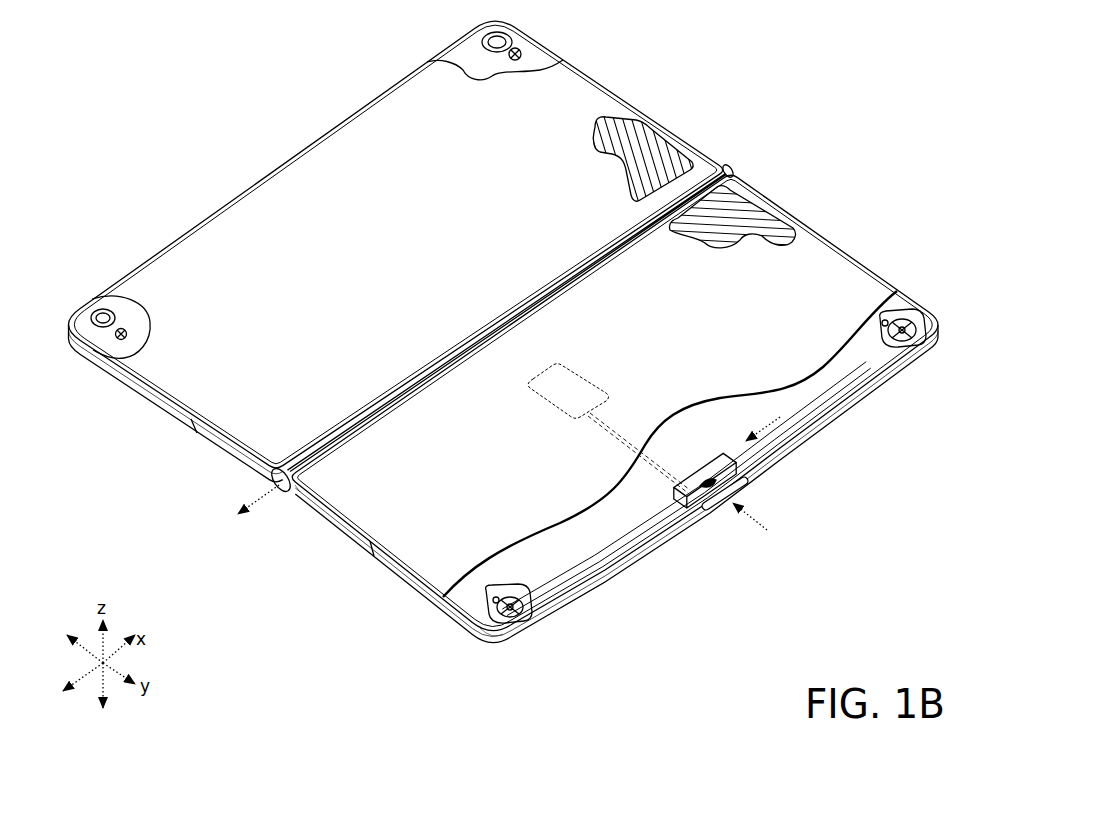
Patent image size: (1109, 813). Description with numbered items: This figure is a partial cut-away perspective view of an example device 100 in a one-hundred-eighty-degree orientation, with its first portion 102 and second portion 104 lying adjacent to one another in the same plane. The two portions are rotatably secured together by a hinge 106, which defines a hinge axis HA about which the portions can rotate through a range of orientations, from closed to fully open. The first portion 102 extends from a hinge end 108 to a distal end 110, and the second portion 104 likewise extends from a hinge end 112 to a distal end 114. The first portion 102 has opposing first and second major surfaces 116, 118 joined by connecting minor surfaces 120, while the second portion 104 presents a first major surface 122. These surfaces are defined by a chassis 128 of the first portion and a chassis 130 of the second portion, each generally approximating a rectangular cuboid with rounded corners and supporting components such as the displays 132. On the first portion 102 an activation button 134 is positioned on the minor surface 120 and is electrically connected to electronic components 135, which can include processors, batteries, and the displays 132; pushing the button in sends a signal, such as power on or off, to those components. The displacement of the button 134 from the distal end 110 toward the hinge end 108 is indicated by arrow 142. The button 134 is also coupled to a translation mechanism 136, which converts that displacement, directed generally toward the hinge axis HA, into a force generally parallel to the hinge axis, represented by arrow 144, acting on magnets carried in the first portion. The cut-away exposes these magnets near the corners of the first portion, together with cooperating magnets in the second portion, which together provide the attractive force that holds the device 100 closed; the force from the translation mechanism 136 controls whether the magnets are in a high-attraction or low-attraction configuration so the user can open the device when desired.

The device 100 is at (223, 84).
The first portion 102 is at (823, 232).
The second portion 104 is at (653, 114).
The hinge 106 is at (732, 167).
The hinge end 108 is at (291, 496).
The distal end 110 is at (482, 638).
The hinge end 112 is at (266, 488).
The distal end 114 is at (88, 356).
The first major surface 116 is at (605, 582).
The second major surface 118 is at (416, 515).
The minor surface 120 is at (843, 407).
The first major surface 122 is at (401, 313).
The chassis 128 is at (410, 574).
The chassis 130 is at (207, 432).
The display 132 is at (714, 250).
The button 134 is at (711, 514).
The electronic components 135 is at (572, 371).
The translation mechanism 136 is at (712, 447).
The arrow 142 is at (764, 516).
The arrow 144 is at (755, 429).
The hinge axis HA is at (242, 513).